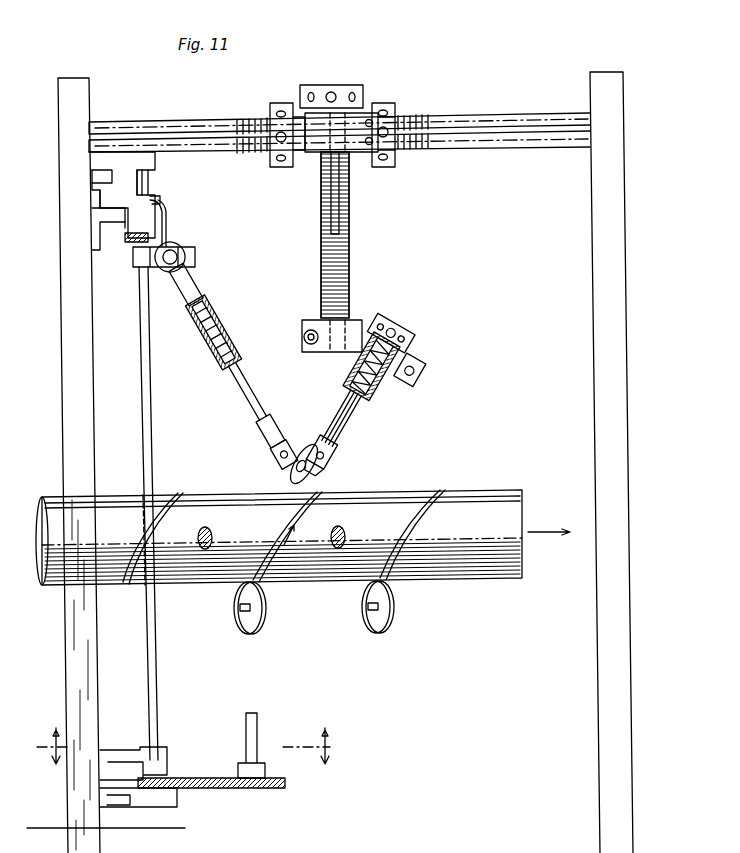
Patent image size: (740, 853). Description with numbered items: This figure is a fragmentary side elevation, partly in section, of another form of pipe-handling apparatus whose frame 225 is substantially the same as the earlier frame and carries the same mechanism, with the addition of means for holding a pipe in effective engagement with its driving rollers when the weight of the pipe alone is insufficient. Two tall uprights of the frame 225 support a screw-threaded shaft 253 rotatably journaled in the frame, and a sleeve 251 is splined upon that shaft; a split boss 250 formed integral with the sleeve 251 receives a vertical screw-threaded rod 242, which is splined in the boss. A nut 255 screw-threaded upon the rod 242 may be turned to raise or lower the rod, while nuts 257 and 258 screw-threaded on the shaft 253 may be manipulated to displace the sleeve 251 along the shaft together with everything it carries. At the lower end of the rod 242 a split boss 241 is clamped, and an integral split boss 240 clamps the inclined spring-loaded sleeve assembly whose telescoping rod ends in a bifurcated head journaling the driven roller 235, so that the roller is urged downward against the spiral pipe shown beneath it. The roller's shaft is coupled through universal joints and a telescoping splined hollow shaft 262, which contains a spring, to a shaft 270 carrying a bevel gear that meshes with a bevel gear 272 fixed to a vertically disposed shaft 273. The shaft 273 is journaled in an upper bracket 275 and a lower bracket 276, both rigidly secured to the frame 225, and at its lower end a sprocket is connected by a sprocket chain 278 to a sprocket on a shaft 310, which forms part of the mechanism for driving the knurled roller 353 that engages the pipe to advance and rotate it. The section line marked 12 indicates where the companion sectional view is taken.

The frame 225 is at (602, 135).
The screw-threaded shaft 253 is at (465, 118).
The nut 257 is at (400, 158).
The nut 255 is at (351, 93).
The split boss 250 is at (355, 121).
The nut 258 is at (272, 158).
The sleeve 251 is at (303, 160).
The screw-threaded rod 242 is at (349, 252).
The split boss 241 is at (356, 326).
The split boss 240 is at (376, 404).
The driven roller 235 is at (301, 445).
The hollow shaft 262 is at (226, 355).
The shaft 270 is at (152, 248).
The bevel gear 272 is at (124, 243).
The vertically disposed shaft 273 is at (157, 178).
The bracket 275 is at (108, 212).
The roller 353 is at (264, 604).
The bracket 276 is at (116, 755).
The sprocket chain 278 is at (190, 778).
The shaft 310 is at (258, 720).
The section line 12 is at (194, 746).